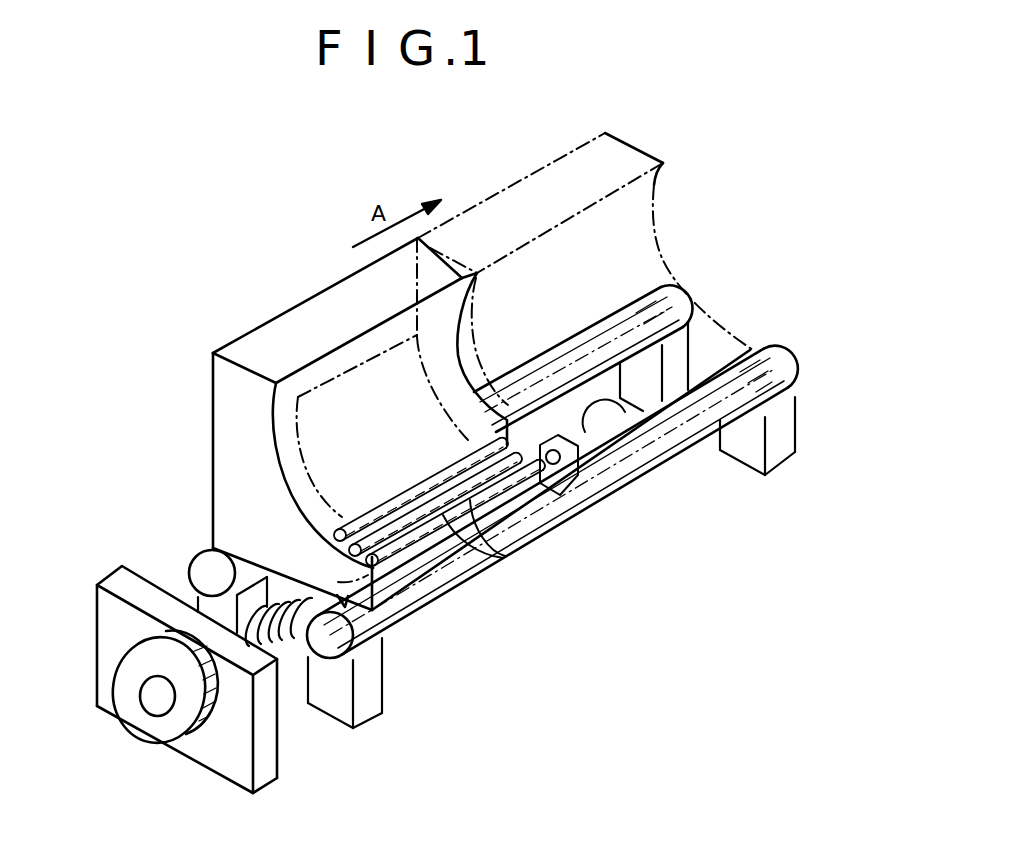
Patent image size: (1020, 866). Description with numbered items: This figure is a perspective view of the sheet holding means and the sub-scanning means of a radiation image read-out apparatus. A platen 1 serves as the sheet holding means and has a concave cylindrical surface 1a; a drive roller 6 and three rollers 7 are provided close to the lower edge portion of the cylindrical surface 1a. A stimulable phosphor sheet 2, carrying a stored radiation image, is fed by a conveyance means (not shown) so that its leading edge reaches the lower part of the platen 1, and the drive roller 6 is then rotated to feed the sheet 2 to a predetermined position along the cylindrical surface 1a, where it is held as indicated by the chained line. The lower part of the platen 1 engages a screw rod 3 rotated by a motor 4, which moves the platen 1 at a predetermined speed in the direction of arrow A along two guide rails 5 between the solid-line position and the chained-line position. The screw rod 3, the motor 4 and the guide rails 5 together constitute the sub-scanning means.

The platen 1 is at (265, 353).
The concave cylindrical surface 1a is at (286, 457).
The stimulable phosphor sheet 2 is at (341, 368).
The screw rod 3 is at (278, 657).
The motor 4 is at (165, 728).
The guide rails 5 is at (203, 566).
The drive roller 6 is at (342, 567).
The rollers 7 is at (498, 556).